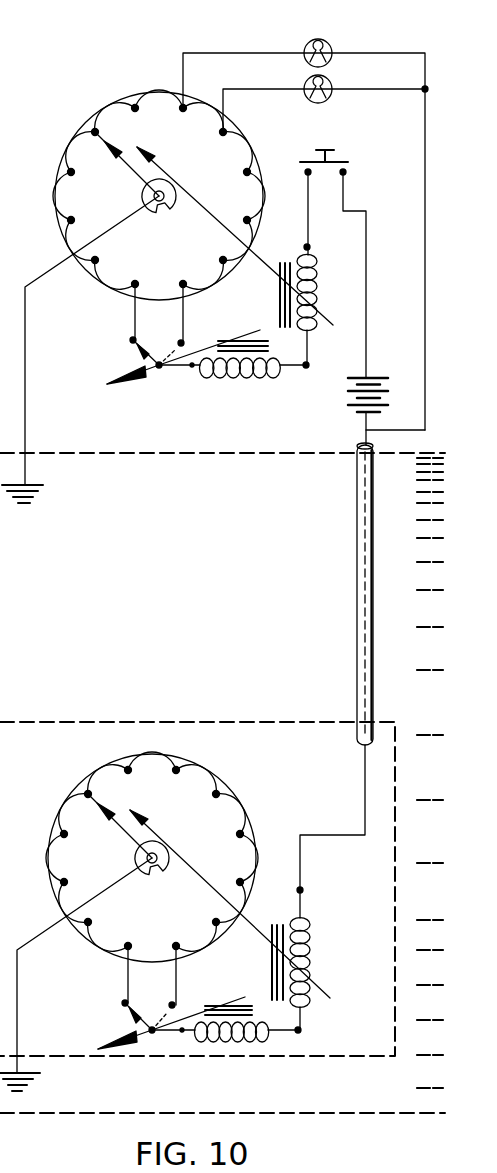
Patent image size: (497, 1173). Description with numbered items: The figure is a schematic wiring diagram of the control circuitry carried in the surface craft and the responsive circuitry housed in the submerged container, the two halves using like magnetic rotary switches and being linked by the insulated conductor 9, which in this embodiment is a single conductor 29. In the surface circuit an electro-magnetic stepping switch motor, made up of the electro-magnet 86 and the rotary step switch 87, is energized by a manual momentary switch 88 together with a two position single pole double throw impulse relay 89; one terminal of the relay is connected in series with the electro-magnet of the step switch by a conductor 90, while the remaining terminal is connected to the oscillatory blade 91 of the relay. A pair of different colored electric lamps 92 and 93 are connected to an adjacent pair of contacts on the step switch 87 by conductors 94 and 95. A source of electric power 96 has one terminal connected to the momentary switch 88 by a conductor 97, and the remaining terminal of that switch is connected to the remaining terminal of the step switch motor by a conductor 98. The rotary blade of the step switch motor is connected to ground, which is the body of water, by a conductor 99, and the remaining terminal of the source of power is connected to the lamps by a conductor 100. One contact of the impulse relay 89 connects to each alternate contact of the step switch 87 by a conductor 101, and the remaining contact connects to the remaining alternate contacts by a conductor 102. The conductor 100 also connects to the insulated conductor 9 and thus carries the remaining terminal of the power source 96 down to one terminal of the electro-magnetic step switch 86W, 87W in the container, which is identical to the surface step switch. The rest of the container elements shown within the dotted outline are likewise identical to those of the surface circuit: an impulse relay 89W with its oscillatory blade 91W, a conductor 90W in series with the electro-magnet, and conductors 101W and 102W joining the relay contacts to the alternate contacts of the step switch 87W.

The conductor 9 is at (356, 640).
The single conductor 29 is at (357, 512).
The electro-magnet of the step switch motor 86 is at (317, 272).
The electro-magnet of the step switch motor in the container 86W is at (311, 953).
The step switch motor 87 is at (180, 137).
The step switch motor in the container 87W is at (196, 814).
The manual momentary switch 88 is at (341, 158).
The impulse relay 89 is at (248, 380).
The impulse relay in the container 89W is at (222, 1045).
The conductor 90 is at (309, 353).
The conductor in the container 90W is at (294, 1032).
The oscillatory blade 91 is at (159, 360).
The oscillatory blade in the container 91W is at (152, 1025).
The electric lamp 92 is at (332, 47).
The electric lamp 93 is at (331, 97).
The conductor 94 is at (229, 53).
The conductor 95 is at (278, 90).
The source of electric power 96 is at (356, 403).
The conductor 97 is at (368, 244).
The conductor 98 is at (307, 207).
The conductor 99 is at (26, 356).
The conductor 100 is at (425, 278).
The conductor 101 is at (95, 277).
The conductor in the container 101W is at (90, 935).
The conductor 102 is at (213, 285).
The conductor in the container 102W is at (203, 945).